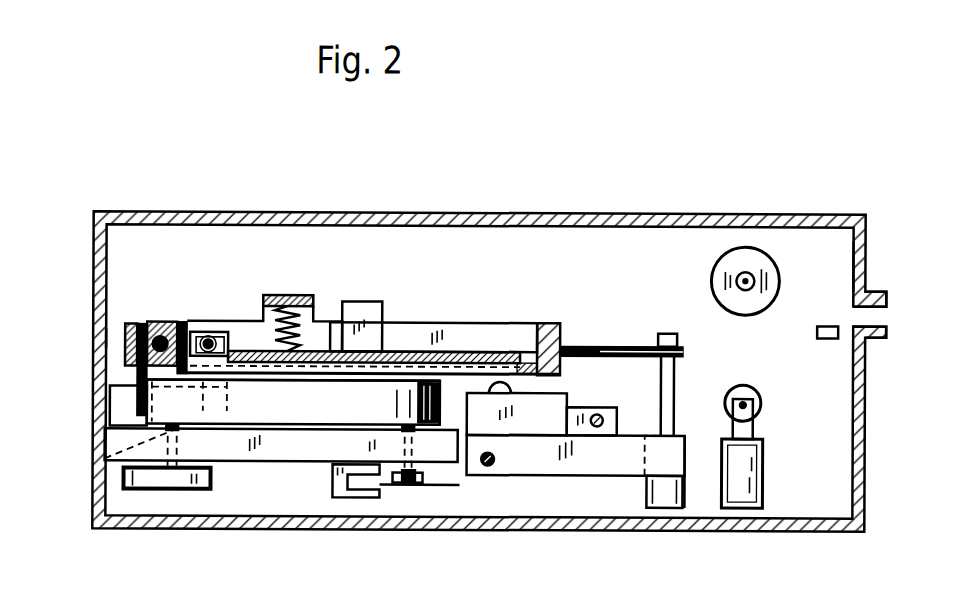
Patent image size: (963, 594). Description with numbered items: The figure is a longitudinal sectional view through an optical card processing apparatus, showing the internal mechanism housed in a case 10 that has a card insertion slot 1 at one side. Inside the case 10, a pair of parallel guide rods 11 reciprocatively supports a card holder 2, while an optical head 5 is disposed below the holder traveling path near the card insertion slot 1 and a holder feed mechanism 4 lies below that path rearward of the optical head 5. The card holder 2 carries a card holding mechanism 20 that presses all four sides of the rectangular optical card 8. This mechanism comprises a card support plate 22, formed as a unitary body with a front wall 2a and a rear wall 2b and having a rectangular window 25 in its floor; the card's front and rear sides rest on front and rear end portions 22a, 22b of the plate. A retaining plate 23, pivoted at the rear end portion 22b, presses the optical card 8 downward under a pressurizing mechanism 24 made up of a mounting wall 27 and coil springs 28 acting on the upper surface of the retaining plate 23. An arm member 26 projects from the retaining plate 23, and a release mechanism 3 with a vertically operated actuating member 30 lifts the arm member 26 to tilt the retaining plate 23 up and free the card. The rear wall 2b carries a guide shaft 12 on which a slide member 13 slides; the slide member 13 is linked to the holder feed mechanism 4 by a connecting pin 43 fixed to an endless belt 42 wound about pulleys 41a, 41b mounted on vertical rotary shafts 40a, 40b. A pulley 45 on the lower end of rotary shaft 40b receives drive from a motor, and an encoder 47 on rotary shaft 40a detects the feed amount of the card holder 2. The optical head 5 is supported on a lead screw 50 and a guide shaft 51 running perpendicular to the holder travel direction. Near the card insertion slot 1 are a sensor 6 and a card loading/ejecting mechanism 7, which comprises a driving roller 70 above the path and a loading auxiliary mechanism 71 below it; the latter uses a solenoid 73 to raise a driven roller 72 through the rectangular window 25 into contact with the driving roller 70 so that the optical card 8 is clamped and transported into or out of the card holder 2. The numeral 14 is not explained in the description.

The card insertion slot 1 is at (883, 306).
The card holder 2 is at (446, 330).
The front wall 2a is at (547, 323).
The rear wall 2b is at (181, 322).
The release mechanism 3 is at (677, 508).
The holder feed mechanism 4 is at (120, 375).
The optical head 5 is at (604, 476).
The sensor 6 is at (823, 338).
The card loading/ejecting mechanism 7 is at (793, 290).
The optical card 8 is at (402, 353).
The case 10 is at (430, 213).
The guide rods 11 is at (598, 345).
The guide shaft 12 is at (151, 324).
The slide member 13 is at (125, 337).
The guide rail 14 is at (113, 445).
The card holding mechanism 20 is at (328, 348).
The card support plate 22 is at (388, 469).
The front end portion 22a is at (535, 380).
The rear end portion 22b is at (220, 377).
The retaining plate 23 is at (226, 350).
The pressurizing mechanism 24 is at (289, 294).
The rectangular window 25 is at (288, 380).
The arm member 26 is at (362, 304).
The mounting wall 27 is at (268, 300).
The coil springs 28 is at (262, 320).
The actuating member 30 is at (678, 380).
The rotary shaft 40a is at (403, 486).
The rotary shaft 40b is at (105, 462).
The pulley 41a is at (380, 404).
The pulley 41b is at (142, 407).
The endless belt 42 is at (266, 428).
The connecting pin 43 is at (108, 340).
The pulley 45 is at (177, 492).
The encoder 47 is at (442, 490).
The lead screw 50 is at (600, 413).
The guide shaft 51 is at (488, 467).
The driving roller 70 is at (711, 280).
The loading auxiliary mechanism 71 is at (782, 492).
The driven roller 72 is at (762, 405).
The solenoid 73 is at (765, 467).